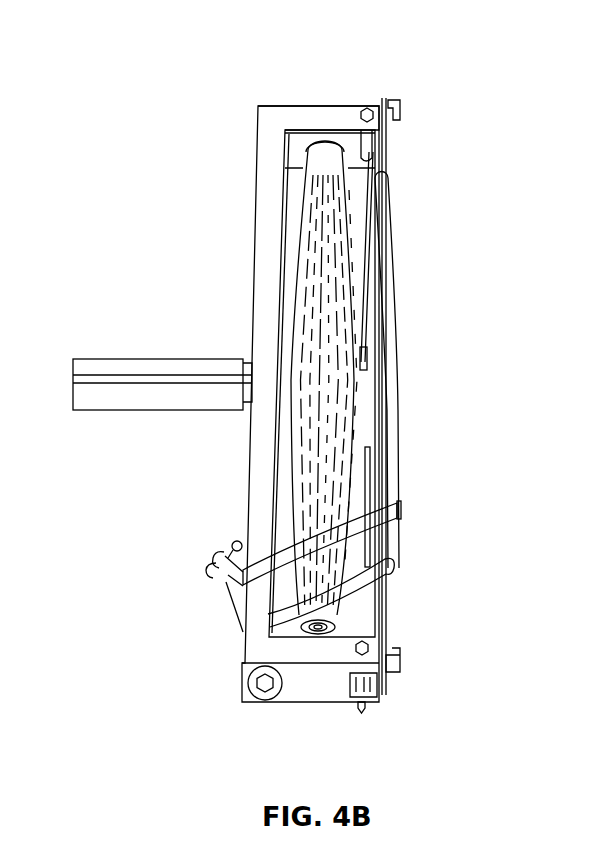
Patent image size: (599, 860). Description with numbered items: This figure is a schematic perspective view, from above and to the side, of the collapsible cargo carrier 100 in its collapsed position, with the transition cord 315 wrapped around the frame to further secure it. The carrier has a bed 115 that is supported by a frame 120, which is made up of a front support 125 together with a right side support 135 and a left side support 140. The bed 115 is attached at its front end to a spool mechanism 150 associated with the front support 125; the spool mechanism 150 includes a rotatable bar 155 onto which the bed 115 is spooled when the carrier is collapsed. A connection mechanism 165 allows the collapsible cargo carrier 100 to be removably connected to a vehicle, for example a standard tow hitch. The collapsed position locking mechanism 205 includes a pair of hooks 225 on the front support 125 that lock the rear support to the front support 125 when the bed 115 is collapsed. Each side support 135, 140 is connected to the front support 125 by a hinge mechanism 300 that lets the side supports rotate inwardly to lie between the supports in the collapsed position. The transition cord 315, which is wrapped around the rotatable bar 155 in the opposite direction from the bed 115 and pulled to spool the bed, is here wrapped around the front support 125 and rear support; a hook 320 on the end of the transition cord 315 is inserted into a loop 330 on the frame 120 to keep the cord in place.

The collapsible cargo carrier 100 is at (465, 33).
The bed 115 is at (376, 218).
The frame 120 is at (220, 223).
The front support 125 is at (252, 312).
The right side support 135 is at (378, 263).
The left side support 140 is at (369, 450).
The spool mechanism 150 is at (317, 98).
The rotatable bar 155 is at (318, 635).
The connection mechanism 165 is at (79, 350).
The collapsed position locking mechanism 205 is at (403, 79).
The front support hooks 225 is at (401, 112).
The hinge mechanism 300 is at (368, 90).
The transition cord 315 is at (393, 510).
The hook 320 is at (220, 552).
The loop 330 is at (234, 540).